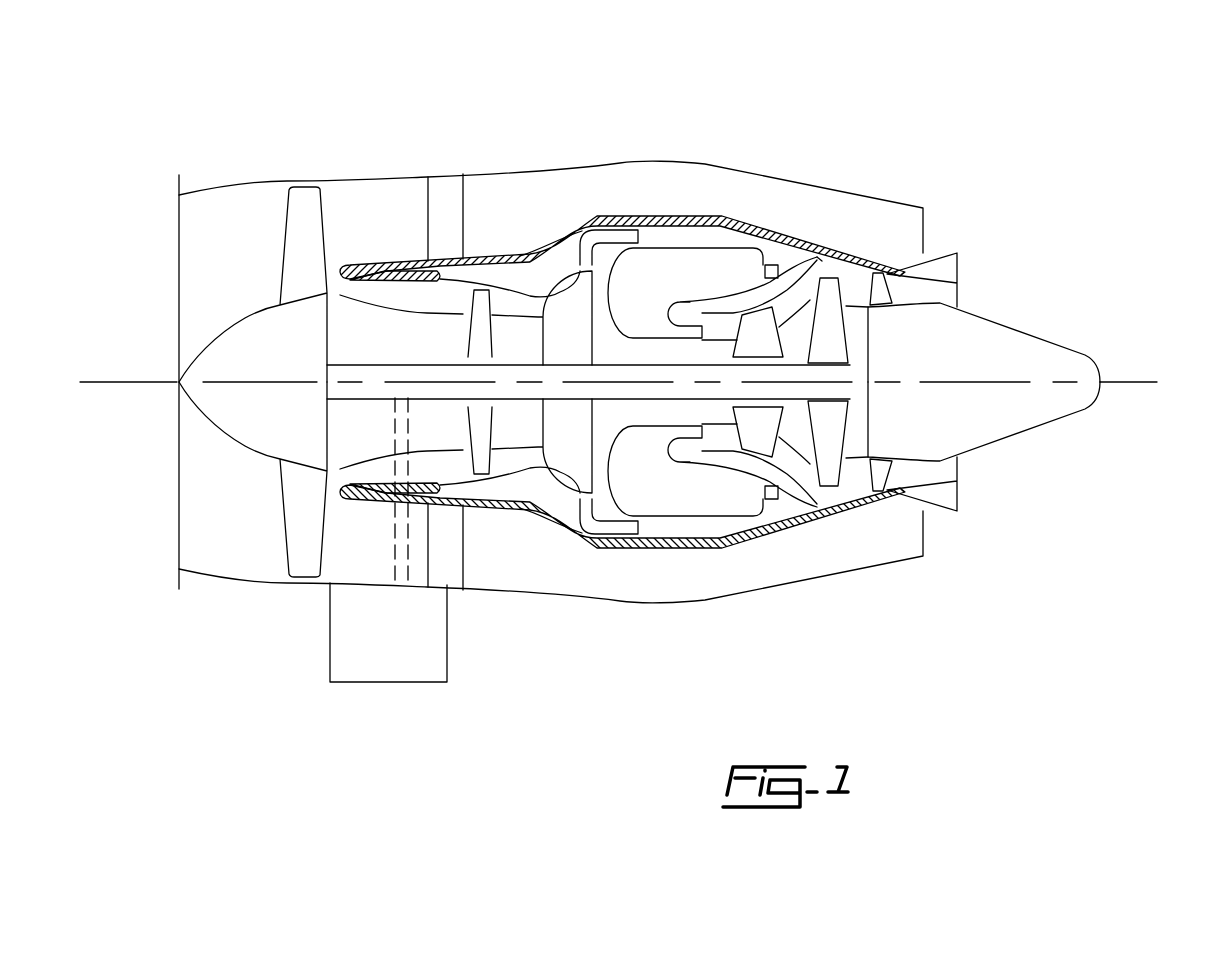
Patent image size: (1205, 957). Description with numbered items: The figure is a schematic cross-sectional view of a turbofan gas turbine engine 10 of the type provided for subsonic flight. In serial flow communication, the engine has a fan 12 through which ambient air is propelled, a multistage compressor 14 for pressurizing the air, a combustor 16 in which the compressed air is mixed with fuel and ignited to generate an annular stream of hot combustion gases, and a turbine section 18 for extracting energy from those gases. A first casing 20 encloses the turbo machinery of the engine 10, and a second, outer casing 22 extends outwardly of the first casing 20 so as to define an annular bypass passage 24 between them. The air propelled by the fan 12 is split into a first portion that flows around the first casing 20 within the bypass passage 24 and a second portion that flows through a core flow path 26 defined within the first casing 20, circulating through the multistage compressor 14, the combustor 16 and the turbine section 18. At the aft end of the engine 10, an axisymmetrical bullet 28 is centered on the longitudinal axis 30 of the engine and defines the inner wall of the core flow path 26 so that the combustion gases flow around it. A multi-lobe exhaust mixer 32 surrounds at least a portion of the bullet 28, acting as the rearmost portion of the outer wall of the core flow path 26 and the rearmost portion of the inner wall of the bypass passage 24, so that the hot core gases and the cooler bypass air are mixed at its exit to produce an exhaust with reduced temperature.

The turbofan gas turbine engine 10 is at (809, 122).
The fan 12 is at (300, 508).
The multistage compressor 14 is at (530, 307).
The combustor 16 is at (687, 265).
The turbine section 18 is at (795, 435).
The first casing 20 is at (780, 292).
The second, outer casing 22 is at (919, 209).
The annular bypass passage 24 is at (895, 522).
The core flow path 26 is at (405, 295).
The axisymmetrical bullet 28 is at (1013, 348).
The longitudinal axis 30 is at (1118, 382).
The multi-lobe exhaust mixer 32 is at (943, 497).